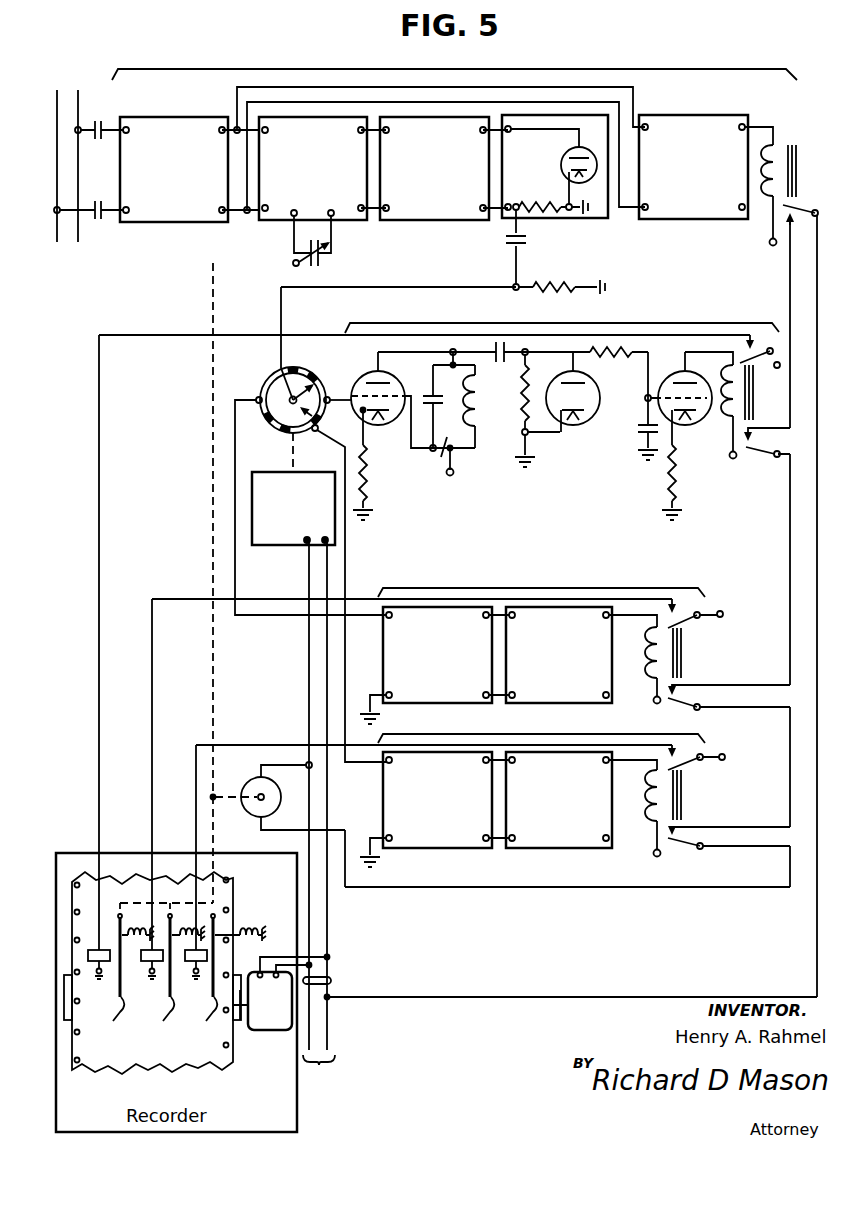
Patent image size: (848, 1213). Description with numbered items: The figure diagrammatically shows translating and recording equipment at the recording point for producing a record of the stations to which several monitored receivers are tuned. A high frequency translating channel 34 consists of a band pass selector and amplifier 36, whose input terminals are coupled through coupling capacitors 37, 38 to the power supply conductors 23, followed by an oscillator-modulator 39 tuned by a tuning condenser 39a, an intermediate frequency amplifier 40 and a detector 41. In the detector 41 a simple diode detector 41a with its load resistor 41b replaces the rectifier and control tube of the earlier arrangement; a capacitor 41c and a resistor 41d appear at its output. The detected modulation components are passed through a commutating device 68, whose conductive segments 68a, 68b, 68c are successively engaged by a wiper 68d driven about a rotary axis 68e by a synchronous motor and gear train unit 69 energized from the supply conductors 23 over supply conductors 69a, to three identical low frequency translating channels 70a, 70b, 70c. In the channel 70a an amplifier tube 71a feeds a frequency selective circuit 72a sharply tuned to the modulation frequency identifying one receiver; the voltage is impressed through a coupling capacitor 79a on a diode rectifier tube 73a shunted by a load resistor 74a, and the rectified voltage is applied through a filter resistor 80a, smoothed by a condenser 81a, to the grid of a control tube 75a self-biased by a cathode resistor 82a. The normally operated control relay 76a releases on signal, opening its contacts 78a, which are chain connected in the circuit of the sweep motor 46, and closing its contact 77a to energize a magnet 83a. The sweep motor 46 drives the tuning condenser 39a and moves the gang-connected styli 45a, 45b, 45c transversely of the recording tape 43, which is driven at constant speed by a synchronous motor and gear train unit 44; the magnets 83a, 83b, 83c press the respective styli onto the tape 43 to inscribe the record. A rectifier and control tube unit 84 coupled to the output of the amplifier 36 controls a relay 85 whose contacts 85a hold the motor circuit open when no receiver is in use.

The translating channel 34 is at (454, 61).
The coupling capacitor 37 is at (98, 123).
The coupling capacitor 38 is at (97, 203).
The band pass selector and amplifier 36 is at (175, 224).
The oscillator-modulator 39 is at (280, 226).
The tuning condenser 39a is at (332, 264).
The intermediate frequency amplifier 40 is at (412, 226).
The detector 41 is at (555, 180).
The diode detector 41a is at (568, 151).
The load resistor 41b is at (516, 203).
The coupling capacitor 41c is at (500, 255).
The resistor 41d is at (551, 278).
The rectifier and control tube unit 84 is at (690, 225).
The relay 85 is at (797, 148).
The contacts 85a is at (812, 204).
The commutating device 68 is at (322, 396).
The conductive segment 68a is at (329, 406).
The conductive segment 68b is at (270, 376).
The conductive segment 68c is at (290, 436).
The wiper 68d is at (299, 372).
The rotary axis 68e is at (256, 398).
The synchronous motor and gear train unit 69 is at (259, 548).
The supply conductors 69a is at (333, 981).
The translating channel 70a is at (562, 317).
The translating channel 70b is at (532, 644).
The translating channel 70c is at (532, 789).
The amplifier tube 71a is at (390, 372).
The frequency selective circuit 72a is at (440, 456).
The diode rectifier tube 73a is at (592, 401).
The load resistor 74a is at (517, 430).
The control tube 75a is at (672, 436).
The control relay 76a is at (755, 421).
The contact 77a is at (773, 328).
The contacts 78a is at (763, 462).
The coupling capacitor 79a is at (506, 364).
The filter resistor 80a is at (638, 348).
The condenser 81a is at (640, 438).
The cathode resistor 82a is at (667, 470).
The magnet 83a is at (110, 963).
The magnet 83b is at (163, 963).
The magnet 83c is at (207, 963).
The stylus 45a is at (120, 965).
The stylus 45b is at (175, 965).
The stylus 45c is at (229, 971).
The sweep motor 46 is at (278, 824).
The synchronous motor and gear train unit 44 is at (279, 1032).
The recording tape 43 is at (205, 1068).
The power supply conductors 23 is at (318, 1043).